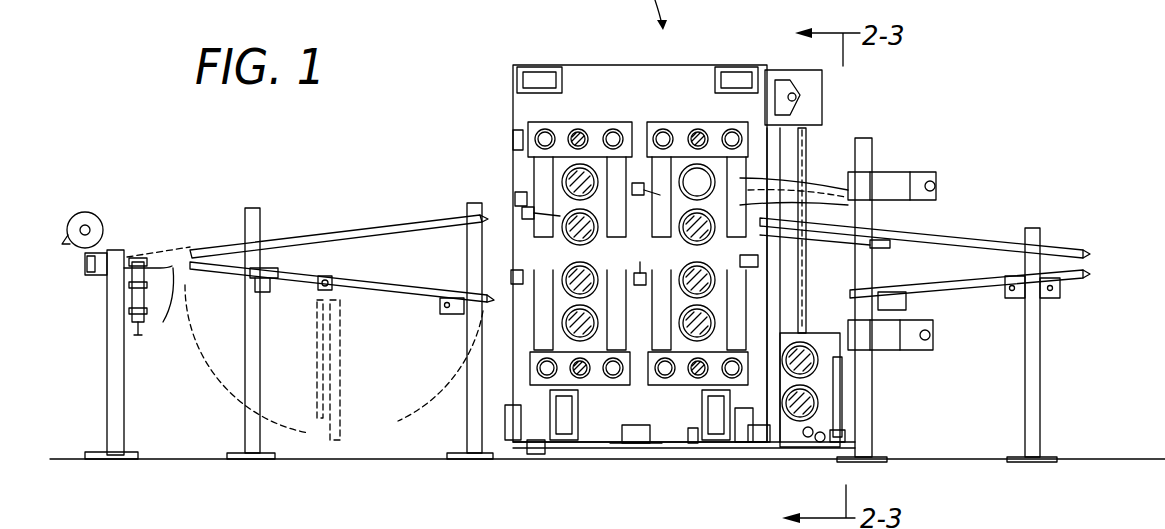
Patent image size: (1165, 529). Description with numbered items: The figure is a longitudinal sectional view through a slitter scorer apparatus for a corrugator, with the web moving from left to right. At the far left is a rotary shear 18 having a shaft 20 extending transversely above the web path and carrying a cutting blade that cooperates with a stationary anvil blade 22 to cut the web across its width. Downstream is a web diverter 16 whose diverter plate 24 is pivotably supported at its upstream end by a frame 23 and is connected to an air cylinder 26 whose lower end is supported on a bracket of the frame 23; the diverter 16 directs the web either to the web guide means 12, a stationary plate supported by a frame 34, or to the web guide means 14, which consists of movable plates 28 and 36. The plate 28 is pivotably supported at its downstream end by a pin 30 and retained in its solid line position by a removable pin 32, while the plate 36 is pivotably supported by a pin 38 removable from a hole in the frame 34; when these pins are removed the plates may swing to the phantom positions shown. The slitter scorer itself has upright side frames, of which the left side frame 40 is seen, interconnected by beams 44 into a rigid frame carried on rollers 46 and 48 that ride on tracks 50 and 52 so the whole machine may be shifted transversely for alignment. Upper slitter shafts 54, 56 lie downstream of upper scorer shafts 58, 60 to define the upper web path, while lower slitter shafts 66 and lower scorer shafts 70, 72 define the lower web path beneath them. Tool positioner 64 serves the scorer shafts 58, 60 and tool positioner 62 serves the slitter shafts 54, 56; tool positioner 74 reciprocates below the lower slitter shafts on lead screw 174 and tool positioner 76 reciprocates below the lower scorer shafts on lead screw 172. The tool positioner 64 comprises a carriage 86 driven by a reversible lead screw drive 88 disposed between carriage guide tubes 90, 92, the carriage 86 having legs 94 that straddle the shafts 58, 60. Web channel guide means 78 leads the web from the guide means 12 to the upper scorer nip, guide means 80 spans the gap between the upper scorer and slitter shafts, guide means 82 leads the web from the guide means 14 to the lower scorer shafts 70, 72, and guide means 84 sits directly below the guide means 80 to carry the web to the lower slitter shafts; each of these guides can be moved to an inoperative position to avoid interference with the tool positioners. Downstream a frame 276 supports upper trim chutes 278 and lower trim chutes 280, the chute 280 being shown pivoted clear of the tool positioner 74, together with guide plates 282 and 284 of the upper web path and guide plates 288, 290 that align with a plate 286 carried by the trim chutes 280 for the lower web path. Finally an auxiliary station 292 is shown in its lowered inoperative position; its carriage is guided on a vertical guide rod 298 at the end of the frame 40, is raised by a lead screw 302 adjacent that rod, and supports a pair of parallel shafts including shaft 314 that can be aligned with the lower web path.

The web guide means 12 is at (350, 237).
The web guide means 14 is at (395, 266).
The web diverter 16 is at (177, 228).
The rotary shear 18 is at (99, 202).
The shaft 20 is at (83, 228).
The anvil blade 22 is at (88, 262).
The frame 23 is at (126, 375).
The diverter plate 24 is at (150, 309).
The air cylinder 26 is at (130, 290).
The plate 28 is at (293, 262).
The pin 30 is at (327, 278).
The removable pin 32 is at (247, 283).
The frame 34 is at (243, 423).
The plate 36 is at (358, 370).
The pin 38 is at (440, 305).
The left side frame 40 is at (594, 65).
The beams 44 is at (540, 68).
The rollers 46 is at (508, 420).
The rollers 48 is at (760, 442).
The track 50 is at (535, 452).
The track 52 is at (743, 442).
The upper slitter shaft 54 is at (697, 128).
The upper slitter shaft 56 is at (755, 262).
The upper scorer shaft 58 is at (562, 180).
The upper scorer shaft 60 is at (576, 234).
The tool positioner 62 is at (712, 128).
The tool positioner 64 is at (525, 125).
The lower slitter shaft 66 is at (712, 278).
The lower scorer shaft 70 is at (585, 268).
The lower scorer shaft 72 is at (565, 325).
The tool positioner 74 is at (660, 398).
The tool positioner 76 is at (626, 398).
The web channel guide means 78 is at (518, 198).
The web channel guide means 80 is at (638, 176).
The web channel guide means 82 is at (500, 275).
The web channel guide means 84 is at (638, 272).
The carriage 86 is at (562, 125).
The reversible lead screw drive 88 is at (578, 128).
The carriage guide tube 90 is at (612, 128).
The carriage guide tube 92 is at (520, 140).
The legs 94 is at (525, 210).
The lead screw 172 is at (580, 385).
The lead screw 174 is at (696, 385).
The frame 276 is at (872, 146).
The upper trim chutes 278 is at (837, 175).
The lower trim chutes 280 is at (838, 340).
The guide plate 282 is at (922, 226).
The guide plate 284 is at (990, 232).
The plate 286 is at (855, 288).
The guide plate 288 is at (960, 285).
The guide plate 290 is at (1082, 274).
The auxiliary station 292 is at (852, 404).
The guide rod 298 is at (860, 214).
The lead screw 302 is at (808, 137).
The shaft 314 is at (817, 397).